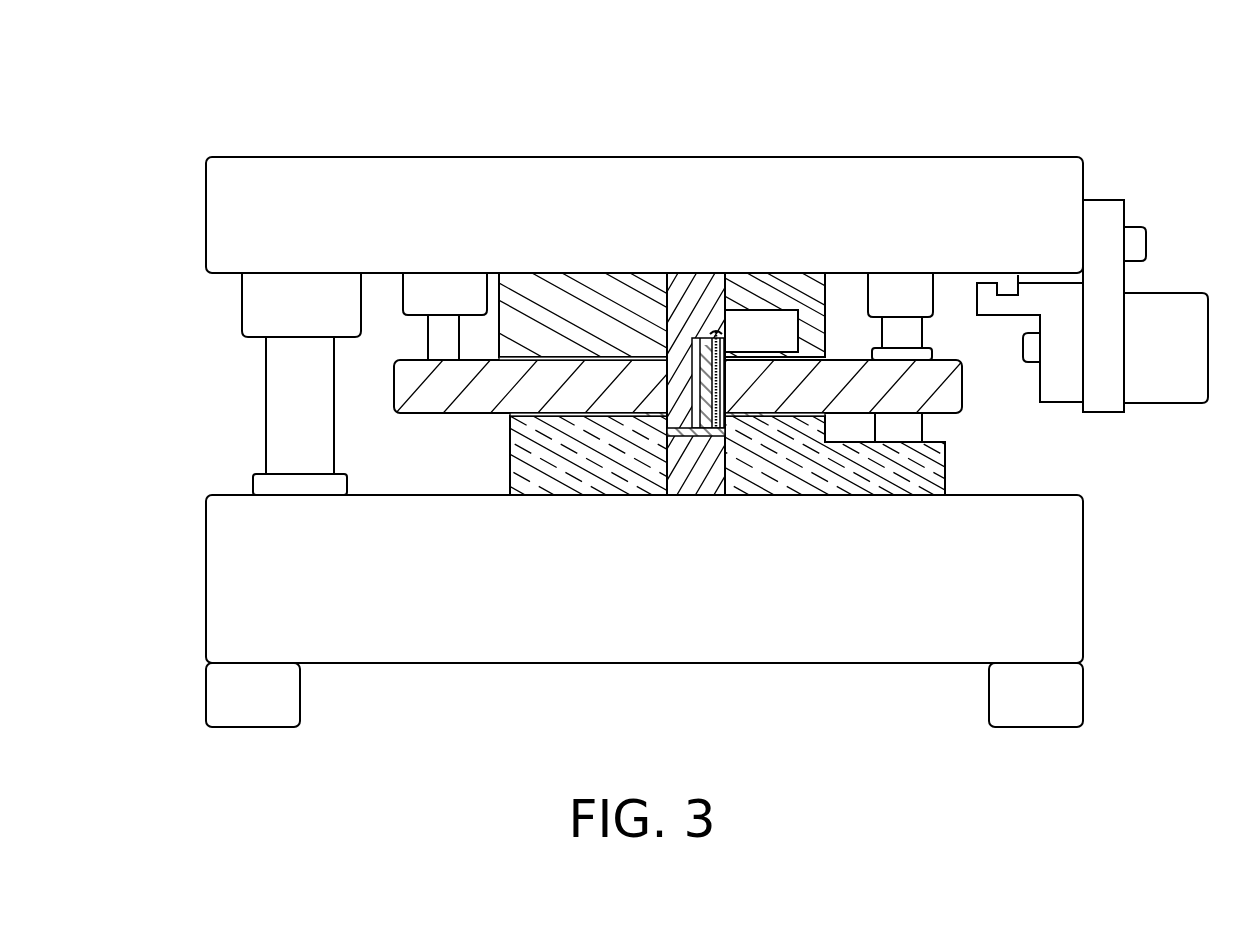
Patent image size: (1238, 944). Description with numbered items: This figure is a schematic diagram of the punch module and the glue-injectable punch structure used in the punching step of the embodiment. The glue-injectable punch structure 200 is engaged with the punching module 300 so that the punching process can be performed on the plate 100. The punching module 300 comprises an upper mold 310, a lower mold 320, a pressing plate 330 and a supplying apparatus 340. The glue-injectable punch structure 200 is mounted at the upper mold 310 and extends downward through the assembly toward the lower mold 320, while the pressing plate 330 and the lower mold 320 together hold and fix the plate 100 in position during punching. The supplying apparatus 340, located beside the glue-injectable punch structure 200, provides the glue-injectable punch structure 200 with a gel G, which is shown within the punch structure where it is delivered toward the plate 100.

The punching module 300 is at (332, 127).
The upper mold 310 is at (583, 300).
The glue-injectable punch structure 200 is at (678, 350).
The supplying apparatus 340 is at (755, 325).
The pressing plate 330 is at (447, 390).
The lower mold 320 is at (557, 475).
The plate 100 is at (652, 417).
The gel G is at (725, 388).